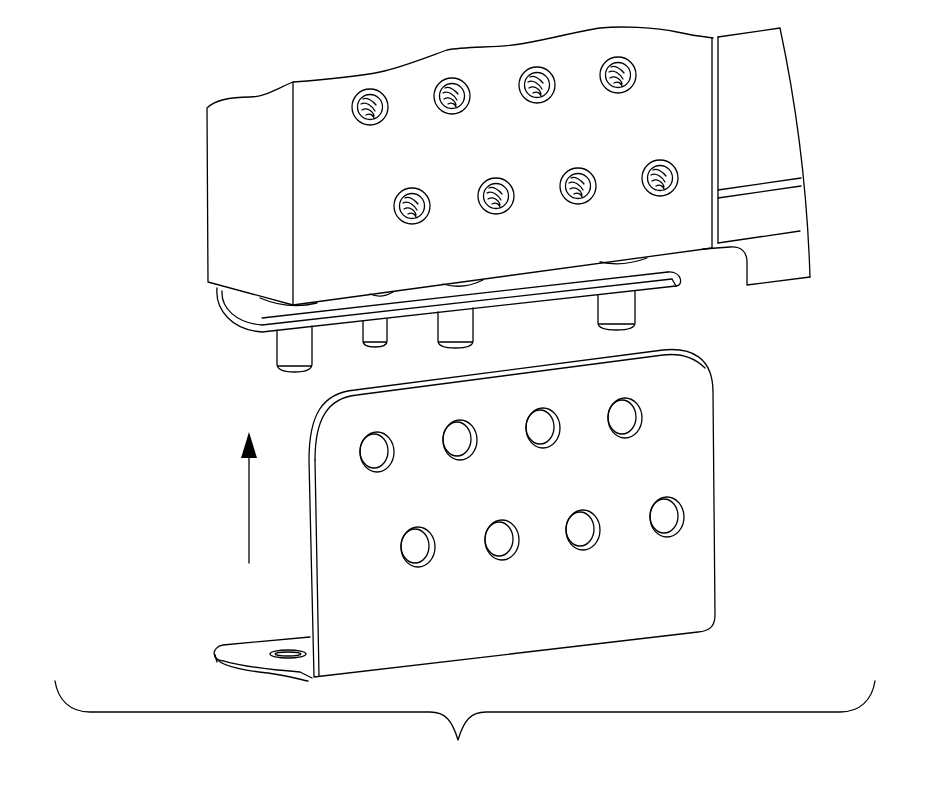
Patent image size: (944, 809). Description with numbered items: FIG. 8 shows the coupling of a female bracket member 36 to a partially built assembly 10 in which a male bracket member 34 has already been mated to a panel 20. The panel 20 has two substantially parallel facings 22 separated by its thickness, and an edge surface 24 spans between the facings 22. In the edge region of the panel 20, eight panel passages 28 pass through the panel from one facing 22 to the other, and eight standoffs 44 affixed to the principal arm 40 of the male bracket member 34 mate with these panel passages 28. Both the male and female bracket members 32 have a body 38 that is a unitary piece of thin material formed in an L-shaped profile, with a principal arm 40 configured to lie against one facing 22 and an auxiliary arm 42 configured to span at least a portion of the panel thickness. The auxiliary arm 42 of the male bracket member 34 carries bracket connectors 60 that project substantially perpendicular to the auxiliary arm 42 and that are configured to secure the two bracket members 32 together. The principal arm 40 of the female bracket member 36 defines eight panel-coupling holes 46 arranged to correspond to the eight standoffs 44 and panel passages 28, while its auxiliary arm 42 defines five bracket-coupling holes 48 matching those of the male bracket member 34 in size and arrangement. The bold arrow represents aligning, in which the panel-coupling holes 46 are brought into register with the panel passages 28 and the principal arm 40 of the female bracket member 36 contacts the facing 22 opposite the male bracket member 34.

The assembly 10 is at (149, 43).
The panel 20 is at (195, 135).
The facing 22 is at (322, 98).
The edge surface 24 is at (233, 212).
The panel passage 28 is at (353, 116).
The standoff 44 is at (387, 118).
The bracket member 32 is at (204, 294).
The male bracket member 34 is at (219, 305).
The female bracket member 36 is at (715, 488).
The body 38 is at (237, 318).
The principal arm 40 is at (715, 407).
The auxiliary arm 42 is at (678, 272).
The panel-coupling hole 46 is at (385, 466).
The bracket-coupling hole 48 is at (288, 647).
The bracket connector 60 is at (288, 351).